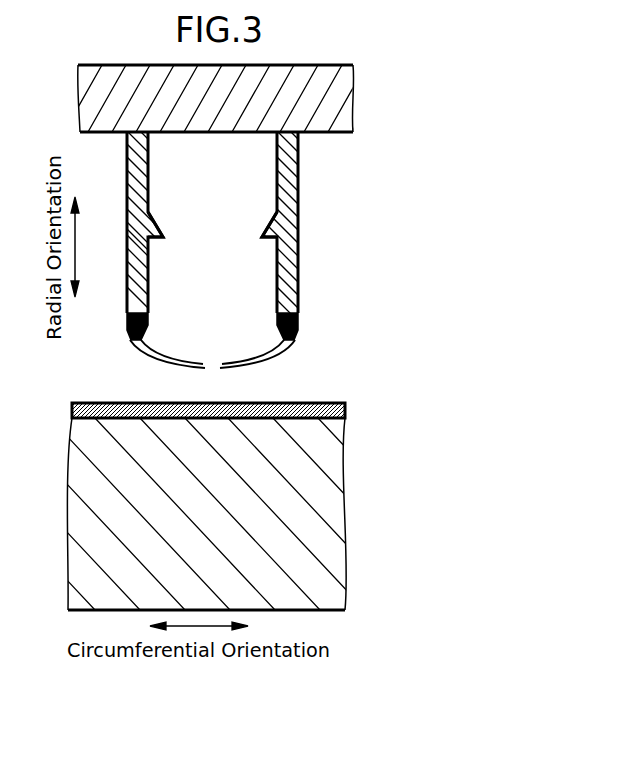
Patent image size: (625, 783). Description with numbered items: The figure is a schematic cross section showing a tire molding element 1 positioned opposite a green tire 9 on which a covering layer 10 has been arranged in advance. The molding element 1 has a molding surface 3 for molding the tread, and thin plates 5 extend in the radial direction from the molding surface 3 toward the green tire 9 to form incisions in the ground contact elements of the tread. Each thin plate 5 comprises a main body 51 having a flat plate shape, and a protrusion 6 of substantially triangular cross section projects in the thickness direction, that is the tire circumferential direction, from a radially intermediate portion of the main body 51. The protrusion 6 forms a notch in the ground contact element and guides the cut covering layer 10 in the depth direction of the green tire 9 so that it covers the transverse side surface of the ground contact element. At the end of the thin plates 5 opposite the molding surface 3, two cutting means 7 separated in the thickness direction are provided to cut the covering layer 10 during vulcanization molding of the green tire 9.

The molding element 1 is at (315, 93).
The molding surface 3 is at (323, 135).
The thin plates 5 is at (148, 183).
The protrusion 6 is at (150, 239).
The main body 51 is at (148, 268).
The cutting means 7 is at (212, 362).
The green tire 9 is at (330, 537).
The covering layer 10 is at (345, 413).